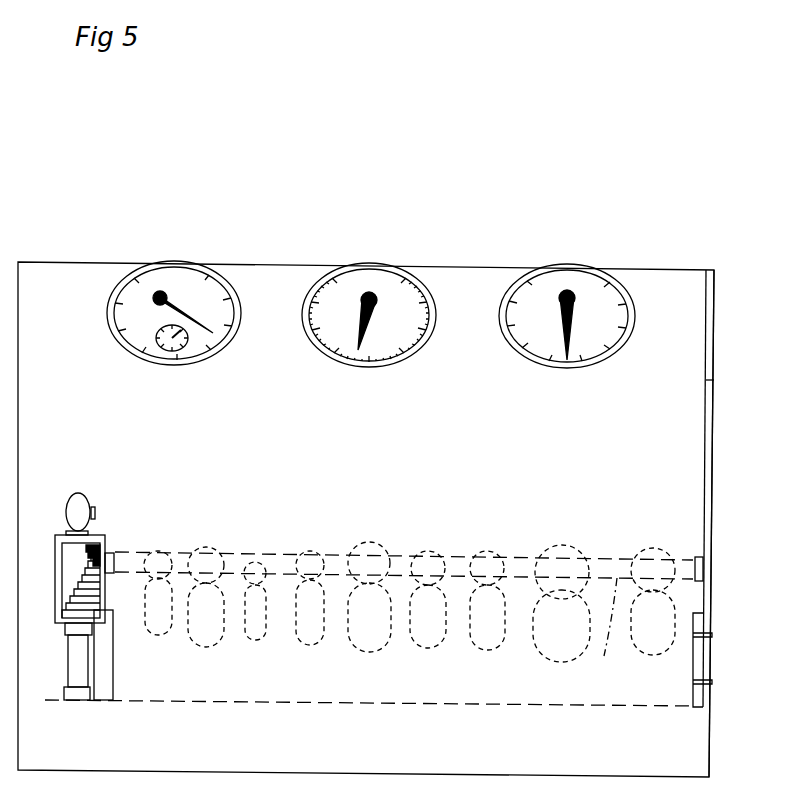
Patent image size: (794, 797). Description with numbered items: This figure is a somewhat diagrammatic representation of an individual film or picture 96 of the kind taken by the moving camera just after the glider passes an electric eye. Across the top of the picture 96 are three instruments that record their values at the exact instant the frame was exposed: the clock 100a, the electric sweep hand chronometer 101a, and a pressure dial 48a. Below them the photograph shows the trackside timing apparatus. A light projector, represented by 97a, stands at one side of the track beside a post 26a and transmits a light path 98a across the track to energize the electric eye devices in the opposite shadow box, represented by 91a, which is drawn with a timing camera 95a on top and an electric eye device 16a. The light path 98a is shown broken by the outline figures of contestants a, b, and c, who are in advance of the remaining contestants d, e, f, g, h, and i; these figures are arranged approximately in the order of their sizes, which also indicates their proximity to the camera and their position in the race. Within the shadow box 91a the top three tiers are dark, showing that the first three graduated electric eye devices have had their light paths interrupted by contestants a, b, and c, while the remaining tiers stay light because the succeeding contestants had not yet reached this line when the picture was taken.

The individual film or picture 96 is at (276, 264).
The clock 100a is at (142, 360).
The electric sweep hand chronometer 101a is at (350, 371).
The third gauge (0-180) 48a is at (530, 373).
The figure head / operator model 95a is at (68, 500).
The shadow box 91a is at (62, 580).
The dashed track / conveyor line 16a is at (101, 529).
The light projector 97a is at (697, 558).
The right side wall 26a is at (705, 489).
The light path 98a is at (609, 624).
The contestant h is at (166, 551).
The contestant d is at (220, 548).
The contestant i is at (263, 560).
The contestant g is at (317, 551).
The contestant b is at (378, 544).
The contestant f is at (438, 550).
The contestant e is at (491, 550).
The contestant a is at (553, 543).
The contestant c is at (637, 550).